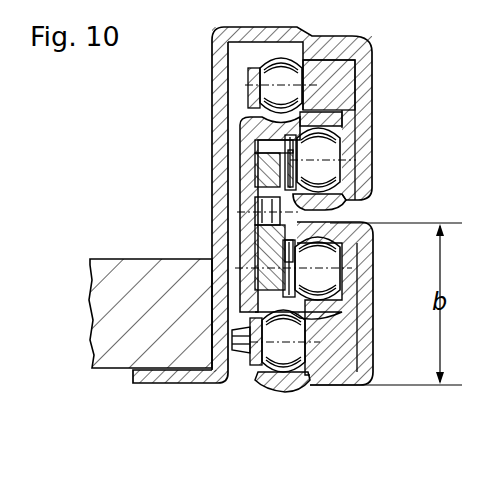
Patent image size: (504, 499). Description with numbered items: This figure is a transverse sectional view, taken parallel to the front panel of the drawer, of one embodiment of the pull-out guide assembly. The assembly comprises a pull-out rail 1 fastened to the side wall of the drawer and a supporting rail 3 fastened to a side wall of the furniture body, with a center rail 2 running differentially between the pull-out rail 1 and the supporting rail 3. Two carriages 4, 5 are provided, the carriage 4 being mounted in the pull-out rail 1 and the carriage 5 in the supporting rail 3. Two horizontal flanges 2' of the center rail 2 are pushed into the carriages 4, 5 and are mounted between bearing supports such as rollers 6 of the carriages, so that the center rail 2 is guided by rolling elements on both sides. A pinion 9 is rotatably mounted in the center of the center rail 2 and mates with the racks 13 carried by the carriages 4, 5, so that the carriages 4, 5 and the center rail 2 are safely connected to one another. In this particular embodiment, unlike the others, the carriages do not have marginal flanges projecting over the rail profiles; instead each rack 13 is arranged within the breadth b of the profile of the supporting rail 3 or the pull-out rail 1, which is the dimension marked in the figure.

The pull-out rail 1 is at (363, 52).
The center rail 2 is at (365, 157).
The horizontal flanges 2' is at (379, 106).
The supporting rail 3 is at (266, 374).
The carriage 4 is at (343, 78).
The carriage 5 is at (330, 352).
The rollers 6 is at (298, 97).
The pinion 9 is at (300, 184).
The rack 13 is at (282, 168).